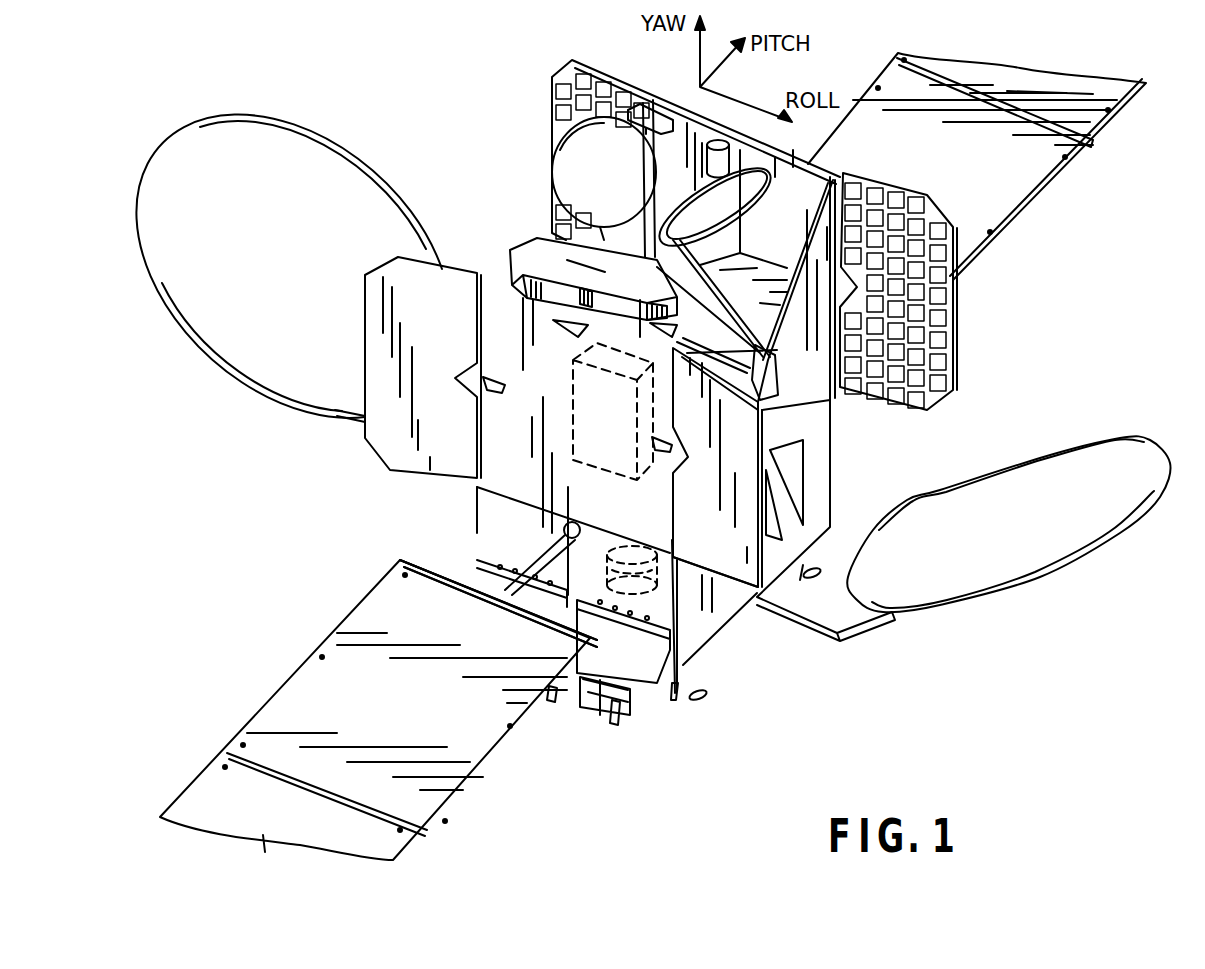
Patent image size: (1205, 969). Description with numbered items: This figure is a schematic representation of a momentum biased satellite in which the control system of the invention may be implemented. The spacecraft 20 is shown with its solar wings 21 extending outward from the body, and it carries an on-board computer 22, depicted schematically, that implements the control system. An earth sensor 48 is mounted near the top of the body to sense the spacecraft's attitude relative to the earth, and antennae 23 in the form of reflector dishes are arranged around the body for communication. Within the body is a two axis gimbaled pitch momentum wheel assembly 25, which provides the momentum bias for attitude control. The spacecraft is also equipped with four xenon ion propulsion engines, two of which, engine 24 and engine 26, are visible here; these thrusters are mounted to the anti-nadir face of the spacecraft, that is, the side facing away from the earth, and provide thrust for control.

The spacecraft 20 is at (693, 653).
The solar wings 21 is at (918, 167).
The on-board computer 22 is at (612, 470).
The antennae 23 is at (610, 178).
The xenon ion propulsion engine 24 is at (547, 700).
The two axis gimbaled pitch momentum wheel assembly 25 is at (657, 612).
The xenon ion propulsion engine 26 is at (602, 720).
The earth sensor 48 is at (663, 108).